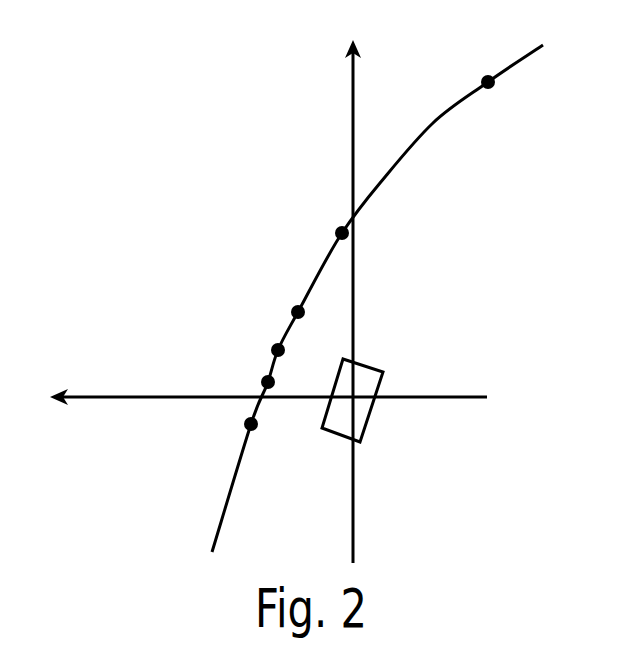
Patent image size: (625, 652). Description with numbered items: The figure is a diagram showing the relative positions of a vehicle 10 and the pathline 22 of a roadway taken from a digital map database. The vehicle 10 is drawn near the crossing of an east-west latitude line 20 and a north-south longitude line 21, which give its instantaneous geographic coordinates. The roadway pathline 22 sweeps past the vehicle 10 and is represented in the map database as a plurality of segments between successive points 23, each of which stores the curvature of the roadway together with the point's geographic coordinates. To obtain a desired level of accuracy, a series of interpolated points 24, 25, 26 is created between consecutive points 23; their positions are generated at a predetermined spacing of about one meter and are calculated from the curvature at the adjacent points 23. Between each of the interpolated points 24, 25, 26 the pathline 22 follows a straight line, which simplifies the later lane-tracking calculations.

The vehicle 10 is at (384, 382).
The east-west latitude line 20 is at (448, 399).
The north-south longitude line 21 is at (352, 97).
The pathline 22 is at (431, 123).
The successive points 23 is at (245, 424).
The interpolated point 24 is at (262, 382).
The interpolated point 25 is at (272, 349).
The interpolated point 26 is at (292, 309).